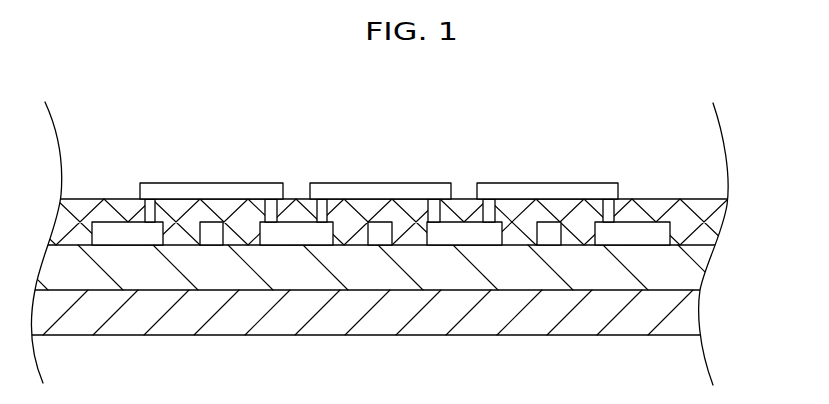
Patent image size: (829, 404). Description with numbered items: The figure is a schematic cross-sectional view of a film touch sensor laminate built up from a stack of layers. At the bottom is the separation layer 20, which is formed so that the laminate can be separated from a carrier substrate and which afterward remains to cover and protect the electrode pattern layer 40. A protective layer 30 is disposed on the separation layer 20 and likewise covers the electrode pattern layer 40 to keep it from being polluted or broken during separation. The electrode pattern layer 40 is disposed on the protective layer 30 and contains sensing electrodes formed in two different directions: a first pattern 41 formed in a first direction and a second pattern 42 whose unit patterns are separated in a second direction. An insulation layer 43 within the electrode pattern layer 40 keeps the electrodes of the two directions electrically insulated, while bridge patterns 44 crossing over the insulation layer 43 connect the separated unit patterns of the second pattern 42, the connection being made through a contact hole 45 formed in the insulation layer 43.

The separation layer 20 is at (678, 315).
The protective layer 30 is at (683, 267).
The electrode pattern layer 40 is at (403, 160).
The first pattern 41 is at (548, 222).
The second pattern 42 is at (462, 233).
The insulation layer 43 is at (408, 225).
The bridge pattern 44 is at (210, 188).
The contact hole 45 is at (298, 198).